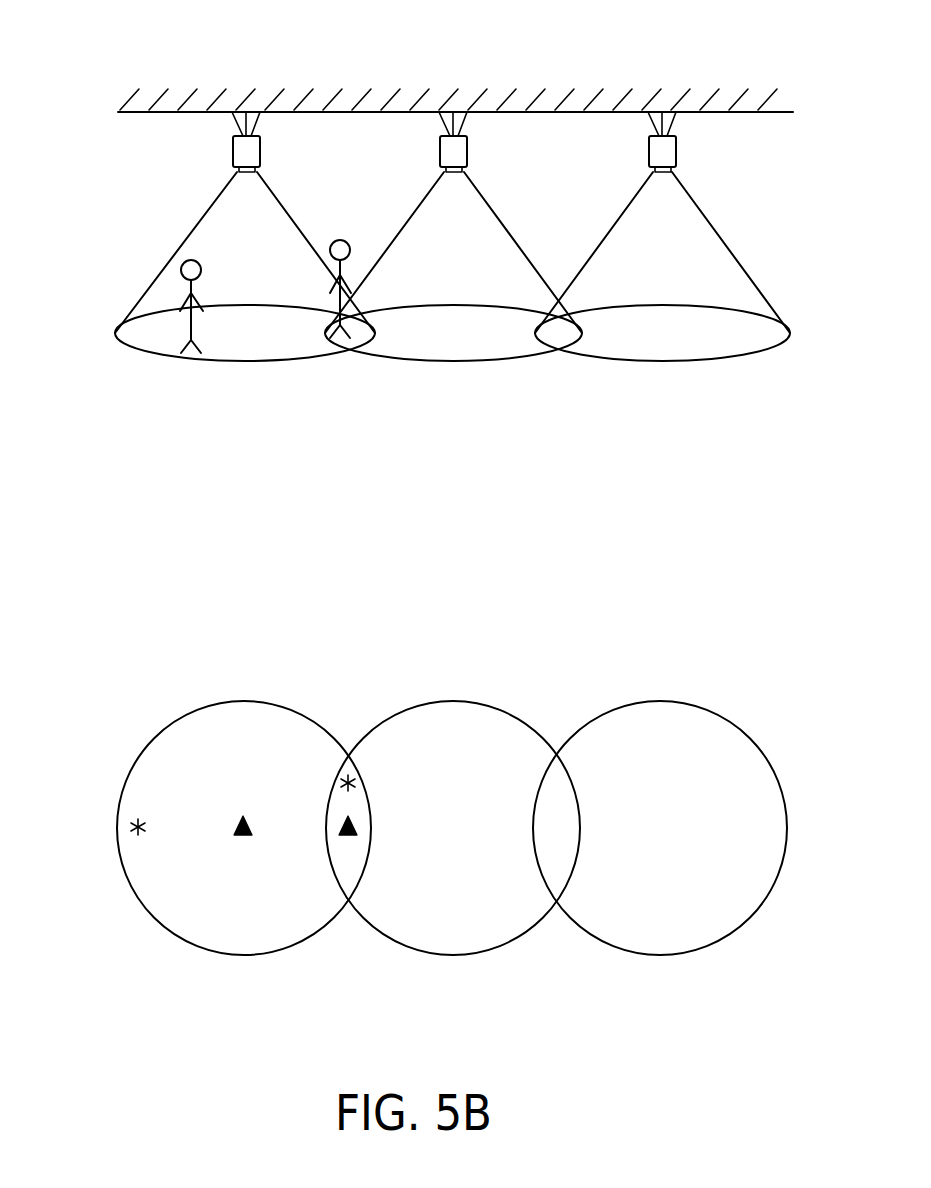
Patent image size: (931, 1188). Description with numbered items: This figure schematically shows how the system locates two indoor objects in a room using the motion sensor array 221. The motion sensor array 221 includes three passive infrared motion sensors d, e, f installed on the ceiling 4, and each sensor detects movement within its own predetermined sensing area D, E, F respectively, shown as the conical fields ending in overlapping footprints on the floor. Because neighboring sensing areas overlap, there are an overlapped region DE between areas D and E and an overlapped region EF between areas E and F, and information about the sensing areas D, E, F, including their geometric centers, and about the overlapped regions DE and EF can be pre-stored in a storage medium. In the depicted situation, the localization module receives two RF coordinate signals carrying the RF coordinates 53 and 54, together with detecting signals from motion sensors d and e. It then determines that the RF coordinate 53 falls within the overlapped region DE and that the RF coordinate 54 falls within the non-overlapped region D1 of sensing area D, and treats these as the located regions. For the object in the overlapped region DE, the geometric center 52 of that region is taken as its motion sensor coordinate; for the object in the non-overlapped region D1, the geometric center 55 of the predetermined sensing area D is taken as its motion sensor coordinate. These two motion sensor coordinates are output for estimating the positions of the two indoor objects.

The ceiling 4 is at (757, 112).
The motion sensor array 221 is at (148, 163).
The motion sensor d is at (233, 153).
The motion sensor e is at (440, 153).
The motion sensor f is at (649, 153).
The predetermined sensing area D is at (237, 345).
The predetermined sensing area E is at (443, 345).
The predetermined sensing area F is at (651, 345).
The non-overlapped region D1 is at (193, 735).
The overlapped region DE is at (347, 905).
The overlapped region EF is at (554, 905).
The geometric center of the overlapped region DE 52 is at (340, 822).
The RF coordinate 53 is at (346, 778).
The RF coordinate 54 is at (130, 827).
The geometric center of the predetermined sensing area D 55 is at (243, 840).